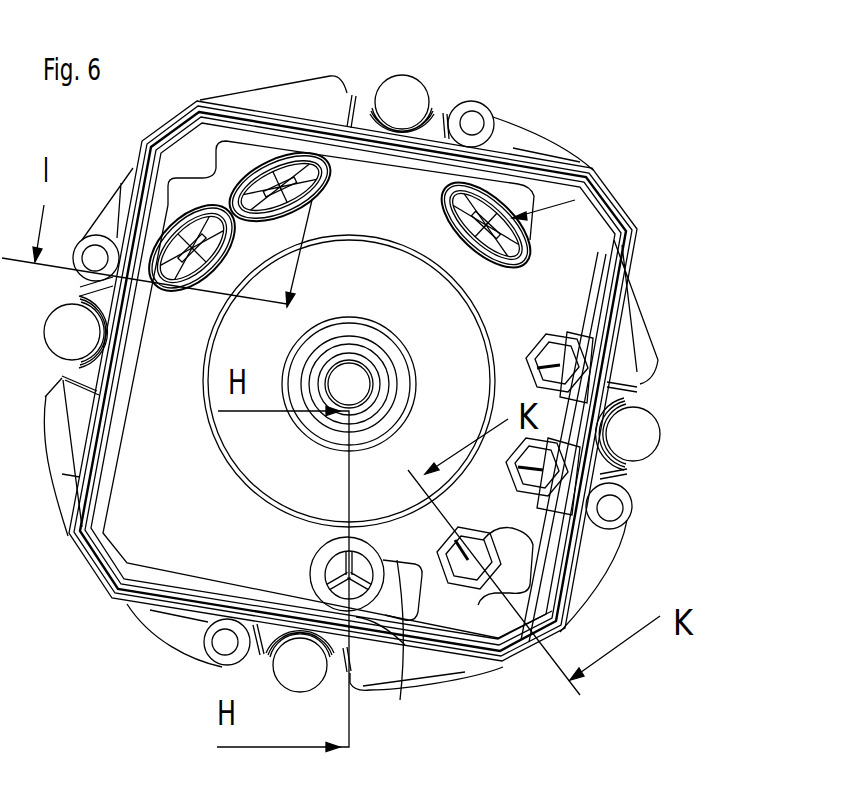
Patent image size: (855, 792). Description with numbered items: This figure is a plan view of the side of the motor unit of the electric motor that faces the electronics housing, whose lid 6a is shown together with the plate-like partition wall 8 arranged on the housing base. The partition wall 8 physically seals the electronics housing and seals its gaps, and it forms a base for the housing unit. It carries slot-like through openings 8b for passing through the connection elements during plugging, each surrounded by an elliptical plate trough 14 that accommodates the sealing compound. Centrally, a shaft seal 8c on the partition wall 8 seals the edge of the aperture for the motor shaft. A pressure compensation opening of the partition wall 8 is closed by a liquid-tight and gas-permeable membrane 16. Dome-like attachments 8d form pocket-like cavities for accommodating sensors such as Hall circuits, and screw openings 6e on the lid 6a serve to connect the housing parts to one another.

The plate troughs 14 is at (240, 102).
The through openings 8b is at (186, 230).
The screw openings 6e is at (95, 257).
The partition wall 8 is at (600, 225).
The lid 6a is at (637, 317).
The shaft seal 8c is at (396, 348).
The dome like attachments 8d is at (590, 354).
The membrane 16 is at (355, 590).